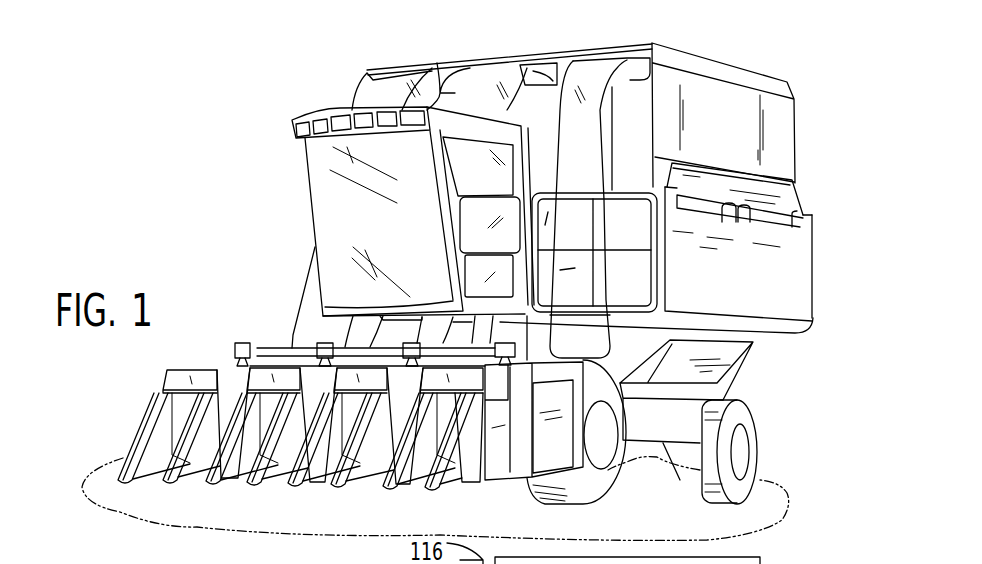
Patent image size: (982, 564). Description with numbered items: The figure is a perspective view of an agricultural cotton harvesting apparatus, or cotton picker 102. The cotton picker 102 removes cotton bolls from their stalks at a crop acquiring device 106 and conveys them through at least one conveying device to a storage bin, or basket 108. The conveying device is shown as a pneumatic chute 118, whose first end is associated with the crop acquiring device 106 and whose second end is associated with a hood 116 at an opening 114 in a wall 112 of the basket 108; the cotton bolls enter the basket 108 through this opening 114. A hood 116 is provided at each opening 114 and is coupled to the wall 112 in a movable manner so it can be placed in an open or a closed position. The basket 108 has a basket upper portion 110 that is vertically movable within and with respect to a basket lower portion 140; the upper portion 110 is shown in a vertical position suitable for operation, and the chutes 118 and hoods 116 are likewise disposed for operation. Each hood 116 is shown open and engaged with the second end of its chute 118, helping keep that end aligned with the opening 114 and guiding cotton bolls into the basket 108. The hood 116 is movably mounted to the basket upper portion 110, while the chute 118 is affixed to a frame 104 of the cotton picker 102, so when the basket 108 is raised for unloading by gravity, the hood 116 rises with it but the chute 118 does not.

The cotton picker 102 is at (133, 196).
The frame 104 is at (667, 438).
The crop acquiring device 106 is at (112, 415).
The basket 108 is at (822, 198).
The basket upper portion 110 is at (794, 100).
The wall 112 is at (632, 100).
The opening 114 is at (532, 70).
The hood 116 is at (430, 68).
The pneumatic chute 118 is at (613, 148).
The basket lower portion 140 is at (812, 270).